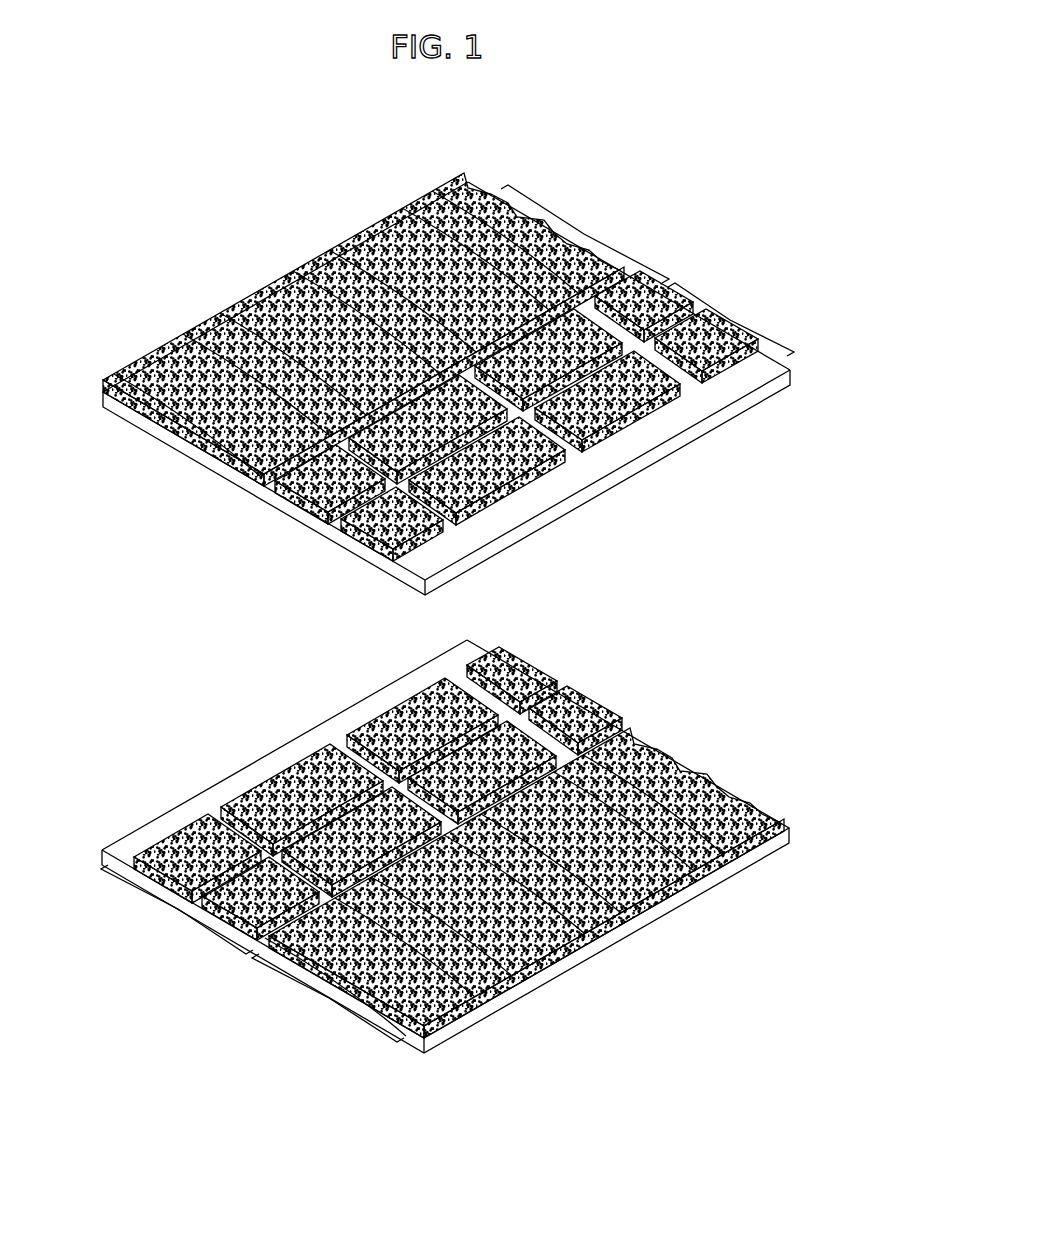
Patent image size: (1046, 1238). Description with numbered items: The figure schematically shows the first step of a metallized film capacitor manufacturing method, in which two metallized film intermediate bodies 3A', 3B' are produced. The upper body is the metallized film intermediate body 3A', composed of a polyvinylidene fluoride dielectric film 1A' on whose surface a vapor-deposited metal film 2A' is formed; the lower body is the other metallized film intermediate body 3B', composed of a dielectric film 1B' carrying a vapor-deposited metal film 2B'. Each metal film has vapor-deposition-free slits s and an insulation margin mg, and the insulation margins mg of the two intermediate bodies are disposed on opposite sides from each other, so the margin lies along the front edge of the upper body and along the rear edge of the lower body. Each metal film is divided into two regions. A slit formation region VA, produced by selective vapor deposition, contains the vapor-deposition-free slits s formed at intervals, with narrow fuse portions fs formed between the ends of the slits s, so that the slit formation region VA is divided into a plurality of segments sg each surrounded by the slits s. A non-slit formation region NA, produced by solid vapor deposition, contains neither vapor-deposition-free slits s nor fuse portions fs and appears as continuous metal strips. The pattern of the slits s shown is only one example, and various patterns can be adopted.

The fuse portion fs is at (112, 380).
The vapor-deposition-free slit s is at (185, 342).
The segment sg is at (634, 309).
The insulation margin mg is at (597, 463).
The non-slit formation region NA is at (460, 607).
The slit formation region VA is at (447, 605).
The dielectric film 1A' is at (446, 388).
The vapor-deposited metal film 2A' is at (363, 330).
The metallized film intermediate body 3A' is at (446, 384).
The dielectric film 1B' is at (445, 868).
The vapor-deposited metal film 2B' is at (526, 899).
The metallized film intermediate body 3B' is at (445, 879).